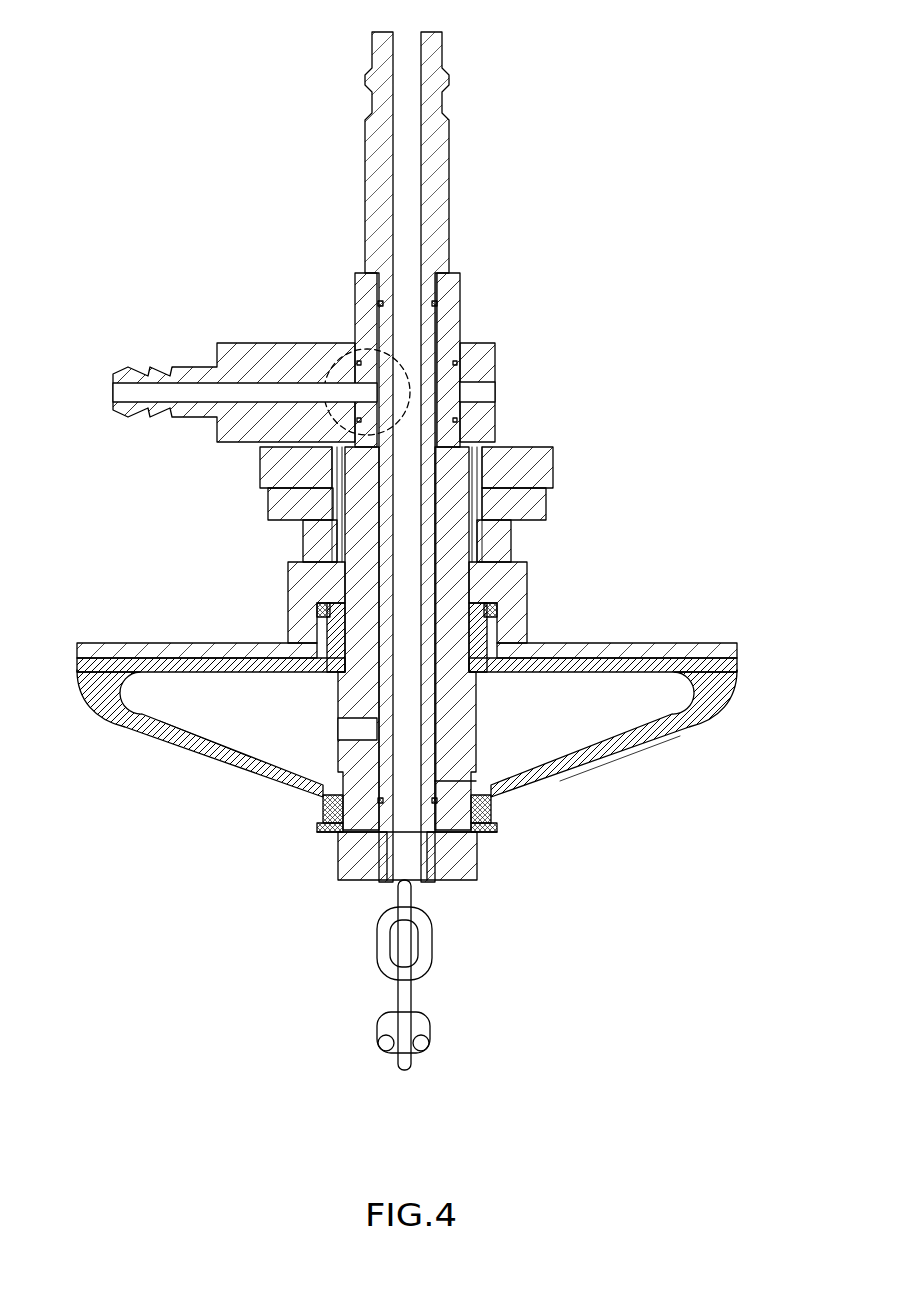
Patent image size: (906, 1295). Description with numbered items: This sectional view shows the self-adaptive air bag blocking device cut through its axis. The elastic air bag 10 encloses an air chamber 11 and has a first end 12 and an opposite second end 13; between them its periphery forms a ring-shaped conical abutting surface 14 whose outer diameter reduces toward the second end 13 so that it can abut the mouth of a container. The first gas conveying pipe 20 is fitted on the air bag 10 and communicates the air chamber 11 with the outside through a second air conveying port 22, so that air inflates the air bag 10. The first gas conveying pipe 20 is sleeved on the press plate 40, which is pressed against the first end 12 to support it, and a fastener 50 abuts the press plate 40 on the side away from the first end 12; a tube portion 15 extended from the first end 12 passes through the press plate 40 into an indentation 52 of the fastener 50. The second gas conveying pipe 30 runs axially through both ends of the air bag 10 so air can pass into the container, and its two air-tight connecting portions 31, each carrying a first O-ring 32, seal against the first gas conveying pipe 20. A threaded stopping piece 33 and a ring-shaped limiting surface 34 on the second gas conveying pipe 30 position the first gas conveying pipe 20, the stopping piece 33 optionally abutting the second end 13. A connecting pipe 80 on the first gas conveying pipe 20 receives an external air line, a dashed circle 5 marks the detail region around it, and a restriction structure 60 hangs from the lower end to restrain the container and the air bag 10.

The detail region 5 is at (342, 358).
The air bag 10 is at (737, 661).
The air chamber 11 is at (172, 723).
The first end 12 is at (165, 657).
The second end 13 is at (325, 833).
The abutting surface 14 is at (663, 735).
The tube portion 15 is at (493, 627).
The first gas conveying pipe 20 is at (460, 280).
The second air conveying port 22 is at (325, 790).
The second gas conveying pipe 30 is at (365, 145).
The air-tight connecting portion 31 is at (438, 330).
The first O-ring 32 is at (437, 303).
The stopping piece 33 is at (478, 870).
The limiting surface 34 is at (353, 285).
The press plate 40 is at (120, 645).
The fastener 50 is at (527, 585).
The indentation 52 is at (330, 605).
The restriction structure 60 is at (366, 951).
The connecting pipe 80 is at (232, 343).